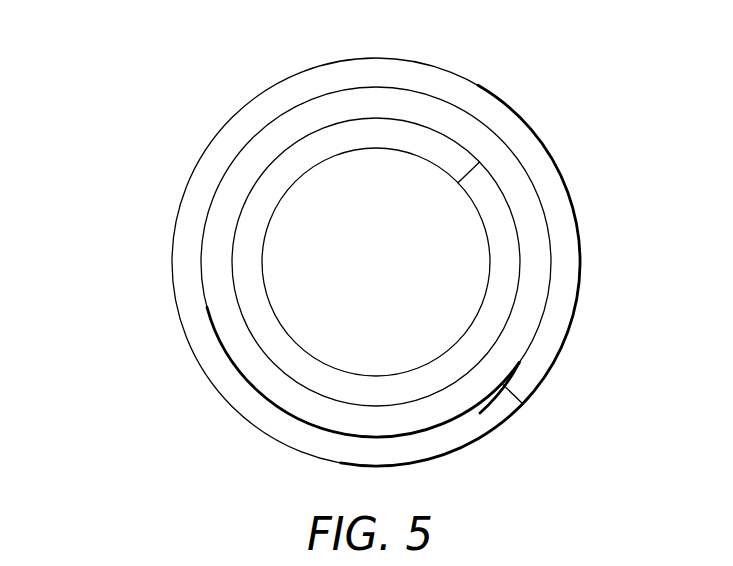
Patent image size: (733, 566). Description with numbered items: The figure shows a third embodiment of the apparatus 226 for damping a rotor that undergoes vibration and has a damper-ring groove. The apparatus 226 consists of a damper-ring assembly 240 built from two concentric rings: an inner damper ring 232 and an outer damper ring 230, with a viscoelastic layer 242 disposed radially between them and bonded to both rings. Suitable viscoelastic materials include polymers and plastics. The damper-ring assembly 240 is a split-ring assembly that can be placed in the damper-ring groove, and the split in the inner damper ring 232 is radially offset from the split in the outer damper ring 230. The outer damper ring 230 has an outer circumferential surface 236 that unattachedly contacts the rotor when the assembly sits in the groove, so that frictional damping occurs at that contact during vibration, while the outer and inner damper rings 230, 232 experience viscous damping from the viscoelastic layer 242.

The apparatus 226 is at (358, 254).
The outer damper ring 230 is at (248, 125).
The inner damper ring 232 is at (255, 305).
The outer circumferential surface 236 is at (502, 427).
The damper-ring assembly 240 is at (172, 207).
The viscoelastic layer 242 is at (527, 240).